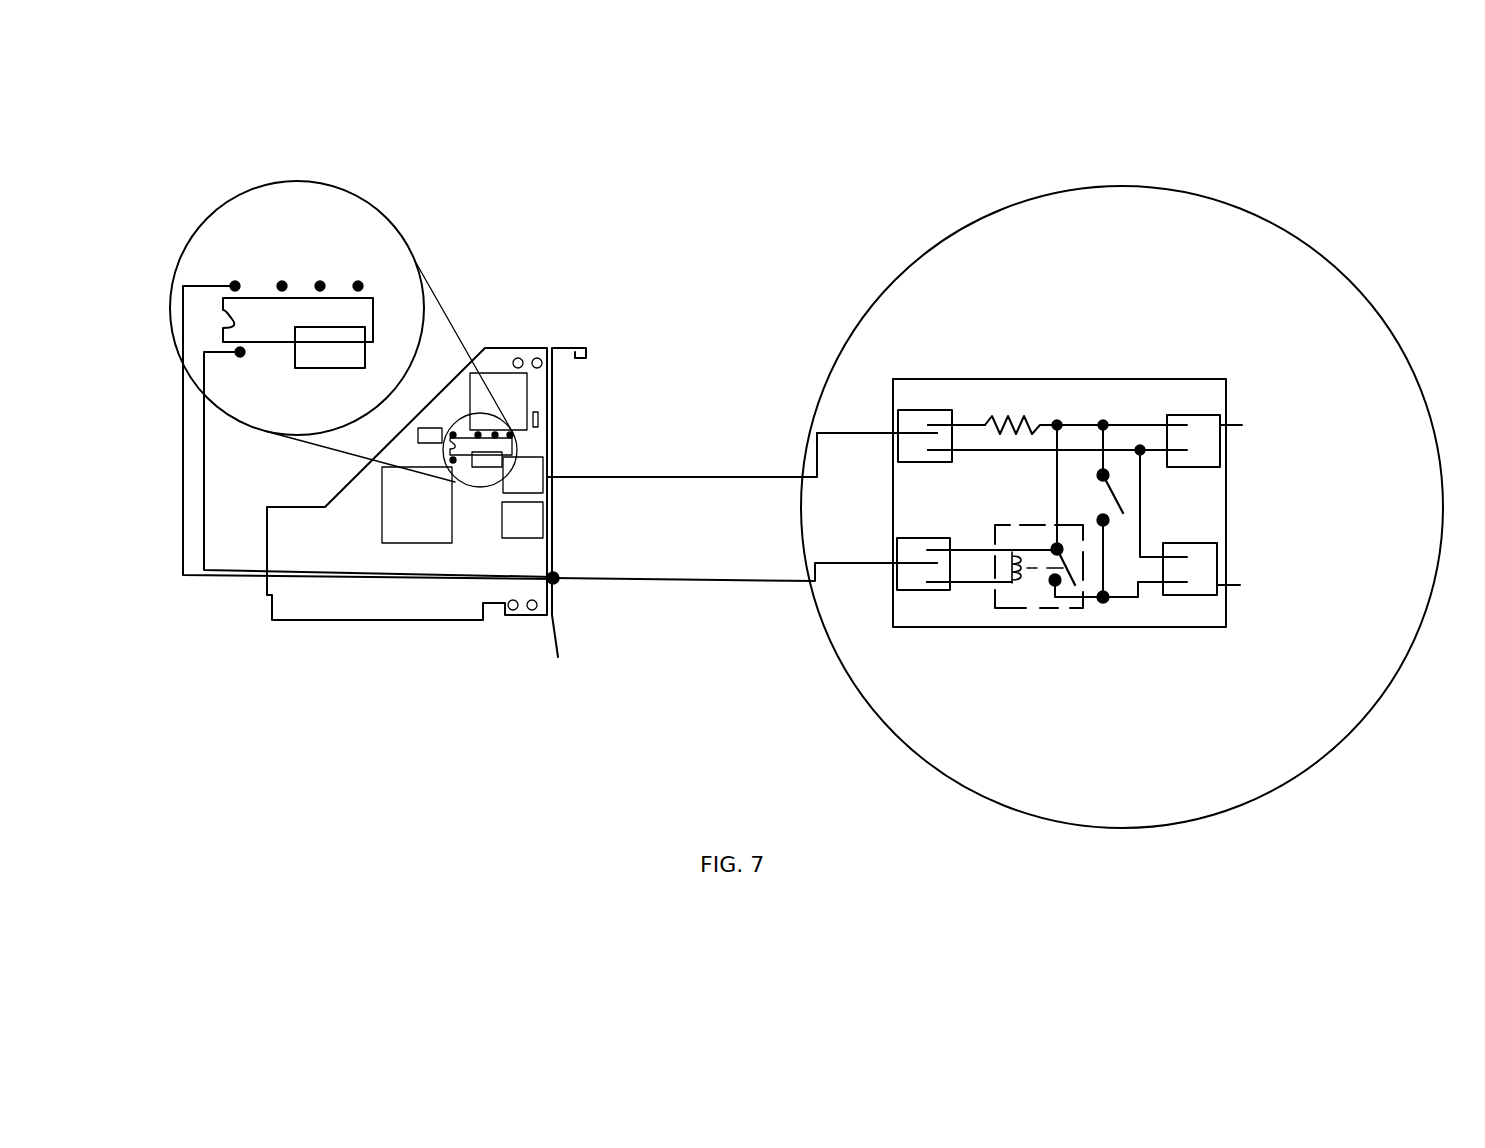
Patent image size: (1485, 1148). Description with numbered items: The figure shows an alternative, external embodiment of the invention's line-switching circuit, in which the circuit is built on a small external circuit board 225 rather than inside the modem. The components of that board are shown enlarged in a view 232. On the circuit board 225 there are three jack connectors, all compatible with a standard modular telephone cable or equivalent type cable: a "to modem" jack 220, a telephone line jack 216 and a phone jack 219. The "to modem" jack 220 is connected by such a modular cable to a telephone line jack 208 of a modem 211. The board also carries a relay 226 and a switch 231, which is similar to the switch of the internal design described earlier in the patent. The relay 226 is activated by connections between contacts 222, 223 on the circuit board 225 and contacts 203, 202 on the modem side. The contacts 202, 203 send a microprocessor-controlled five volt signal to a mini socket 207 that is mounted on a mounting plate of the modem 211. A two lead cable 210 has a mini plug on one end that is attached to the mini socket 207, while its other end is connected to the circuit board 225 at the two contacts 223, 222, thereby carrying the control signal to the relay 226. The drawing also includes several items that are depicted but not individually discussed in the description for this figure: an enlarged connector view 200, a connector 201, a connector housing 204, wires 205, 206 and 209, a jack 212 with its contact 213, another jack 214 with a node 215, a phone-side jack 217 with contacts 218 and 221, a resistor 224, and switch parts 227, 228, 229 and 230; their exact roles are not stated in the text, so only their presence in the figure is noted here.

The enlarged view of connector 200 is at (365, 201).
The connector 201 is at (448, 420).
The contact 202 is at (235, 286).
The contact 203 is at (240, 354).
The connector housing 204 is at (325, 369).
The wire 205 is at (204, 500).
The wire 206 is at (218, 577).
The mini socket 207 is at (556, 582).
The telephone line jack 208 is at (556, 479).
The wire 209 is at (840, 433).
The two lead cable 210 is at (700, 578).
The modem 211 is at (302, 507).
The jack 212 is at (945, 410).
The contact 213 is at (937, 450).
The jack 214 is at (1183, 415).
The node 215 is at (1178, 455).
The telephone line jack 216 is at (1242, 425).
The phone jack 217 is at (1196, 546).
The contact 218 is at (1178, 596).
The phone jack 219 is at (1240, 585).
The "to modem" jack 220 is at (892, 445).
The contact 221 is at (892, 578).
The contact 222 is at (936, 538).
The contact 223 is at (947, 591).
The resistor 224 is at (1022, 418).
The circuit board 225 is at (1105, 379).
The relay 226 is at (1033, 610).
The switch contact 227 is at (1053, 586).
The relay coil contact 228 is at (1053, 548).
The switch 229 is at (1102, 477).
The switch contact 230 is at (1108, 520).
The switch 231 is at (1120, 497).
The view 232 is at (1364, 295).